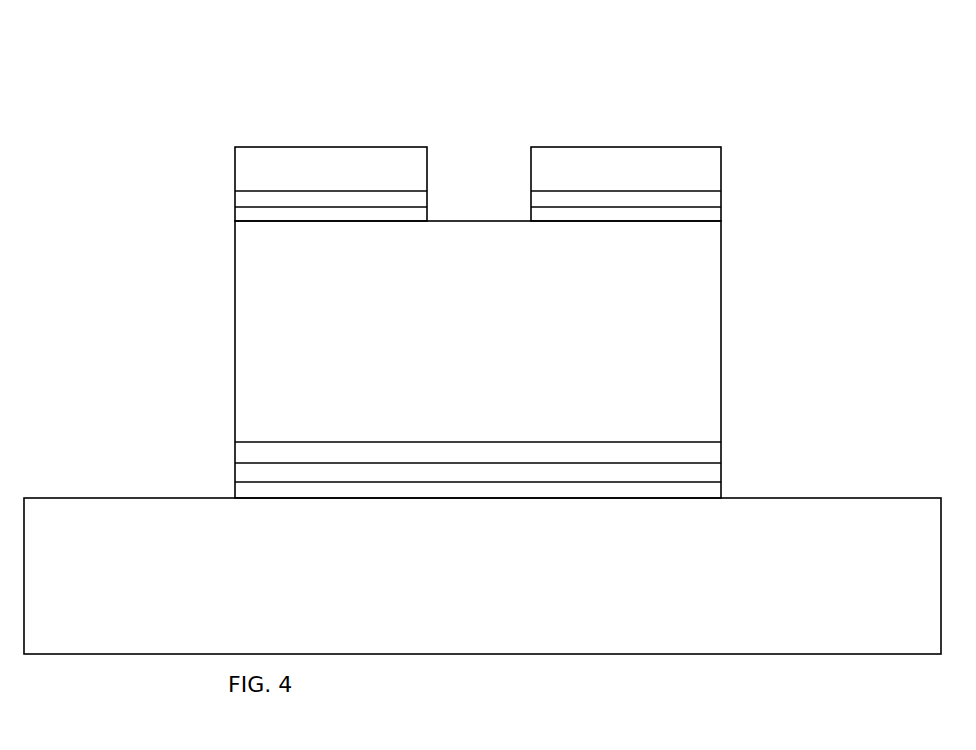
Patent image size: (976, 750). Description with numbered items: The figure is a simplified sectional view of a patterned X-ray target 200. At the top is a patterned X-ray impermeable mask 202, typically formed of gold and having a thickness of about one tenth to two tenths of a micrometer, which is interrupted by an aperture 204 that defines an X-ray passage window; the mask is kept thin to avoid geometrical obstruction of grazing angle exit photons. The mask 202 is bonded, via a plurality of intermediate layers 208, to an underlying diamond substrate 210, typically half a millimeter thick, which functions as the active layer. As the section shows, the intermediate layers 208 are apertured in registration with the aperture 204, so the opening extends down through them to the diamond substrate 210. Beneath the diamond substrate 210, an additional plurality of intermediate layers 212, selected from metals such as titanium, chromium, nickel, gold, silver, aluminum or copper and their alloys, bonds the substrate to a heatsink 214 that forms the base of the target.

The patterned X-ray target 200 is at (148, 127).
The patterned X-ray impermeable mask 202 is at (692, 145).
The aperture 204 is at (458, 153).
The intermediate layers 208 is at (730, 228).
The diamond substrate 210 is at (693, 314).
The intermediate layers 212 is at (730, 430).
The heatsink 214 is at (744, 609).